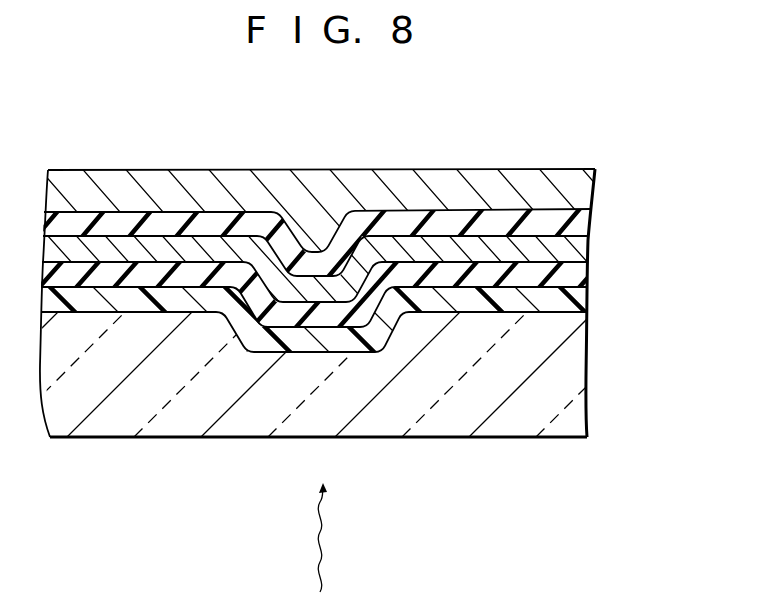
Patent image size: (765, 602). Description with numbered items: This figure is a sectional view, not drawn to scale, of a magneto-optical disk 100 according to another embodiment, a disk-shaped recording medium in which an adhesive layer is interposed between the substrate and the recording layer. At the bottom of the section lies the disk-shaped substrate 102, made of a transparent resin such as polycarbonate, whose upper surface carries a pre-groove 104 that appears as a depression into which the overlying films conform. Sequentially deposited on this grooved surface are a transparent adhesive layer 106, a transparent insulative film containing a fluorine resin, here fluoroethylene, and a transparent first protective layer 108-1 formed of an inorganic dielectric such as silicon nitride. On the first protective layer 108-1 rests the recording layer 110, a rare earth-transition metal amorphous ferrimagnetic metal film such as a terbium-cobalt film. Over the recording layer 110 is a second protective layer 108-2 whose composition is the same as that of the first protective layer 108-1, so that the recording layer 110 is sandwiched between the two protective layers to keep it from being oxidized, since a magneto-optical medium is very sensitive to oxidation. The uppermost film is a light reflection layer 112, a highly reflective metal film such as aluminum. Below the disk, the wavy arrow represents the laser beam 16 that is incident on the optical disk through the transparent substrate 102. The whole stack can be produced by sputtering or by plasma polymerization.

The magneto-optical disk 100 is at (517, 168).
The disk-shaped substrate 102 is at (583, 417).
The pre-groove 104 is at (333, 354).
The adhesive layer 106 is at (578, 300).
The first protective layer 108-1 is at (572, 272).
The recording layer 110 is at (578, 253).
The second protective layer 108-2 is at (582, 221).
The light reflection layer 112 is at (583, 190).
The laser beam 16 is at (323, 527).